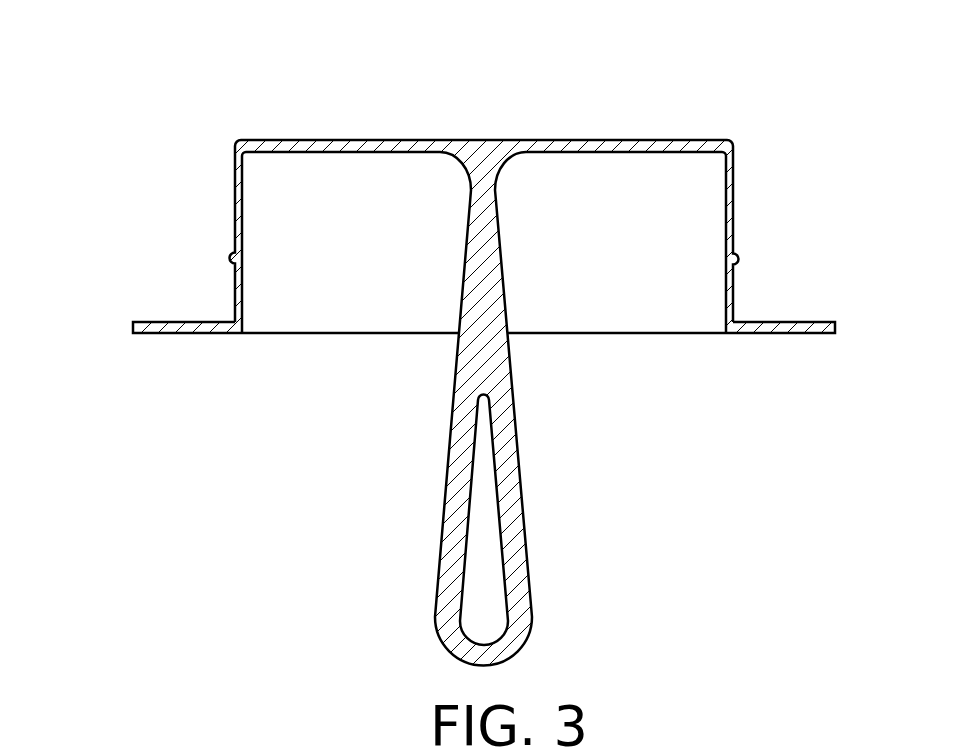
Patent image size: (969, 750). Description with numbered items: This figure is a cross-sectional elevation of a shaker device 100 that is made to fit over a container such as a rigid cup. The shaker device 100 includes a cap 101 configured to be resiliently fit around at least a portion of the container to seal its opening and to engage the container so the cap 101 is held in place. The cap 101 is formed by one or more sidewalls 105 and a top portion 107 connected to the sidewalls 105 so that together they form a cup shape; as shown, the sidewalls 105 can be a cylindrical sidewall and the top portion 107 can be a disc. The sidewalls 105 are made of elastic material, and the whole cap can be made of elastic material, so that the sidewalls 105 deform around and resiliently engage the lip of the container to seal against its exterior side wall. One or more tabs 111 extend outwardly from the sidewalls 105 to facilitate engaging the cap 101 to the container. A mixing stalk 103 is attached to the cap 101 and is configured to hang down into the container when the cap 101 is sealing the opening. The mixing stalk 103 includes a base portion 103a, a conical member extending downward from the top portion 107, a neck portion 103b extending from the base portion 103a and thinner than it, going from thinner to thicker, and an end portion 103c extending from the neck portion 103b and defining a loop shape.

The shaker device 100 is at (200, 98).
The cap 101 is at (605, 138).
The mixing stalk 103 is at (453, 393).
The base portion 103a is at (488, 165).
The neck portion 103b is at (483, 233).
The end portion 103c is at (507, 473).
The sidewalls 105 is at (235, 220).
The top portion 107 is at (397, 140).
The tabs 111 is at (133, 323).